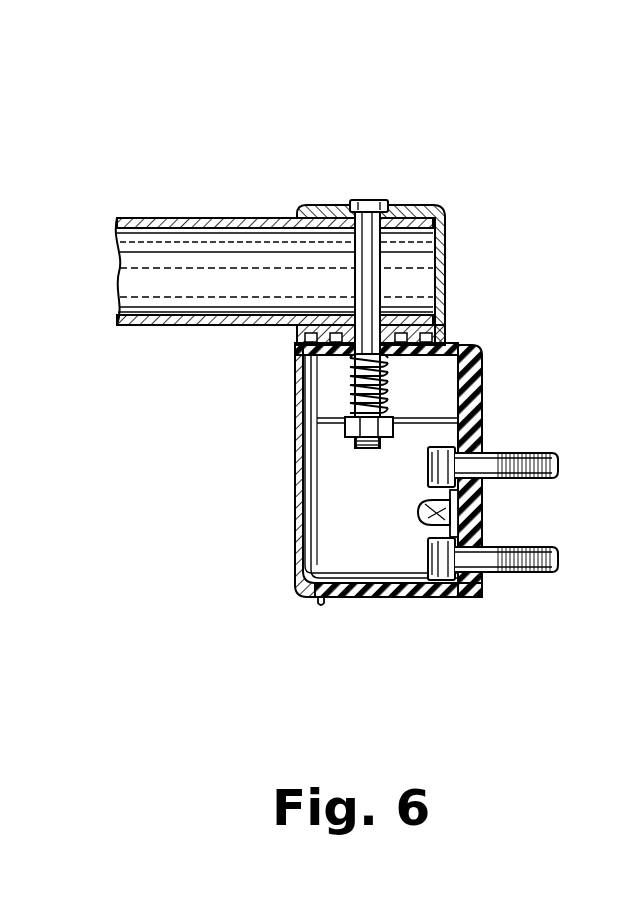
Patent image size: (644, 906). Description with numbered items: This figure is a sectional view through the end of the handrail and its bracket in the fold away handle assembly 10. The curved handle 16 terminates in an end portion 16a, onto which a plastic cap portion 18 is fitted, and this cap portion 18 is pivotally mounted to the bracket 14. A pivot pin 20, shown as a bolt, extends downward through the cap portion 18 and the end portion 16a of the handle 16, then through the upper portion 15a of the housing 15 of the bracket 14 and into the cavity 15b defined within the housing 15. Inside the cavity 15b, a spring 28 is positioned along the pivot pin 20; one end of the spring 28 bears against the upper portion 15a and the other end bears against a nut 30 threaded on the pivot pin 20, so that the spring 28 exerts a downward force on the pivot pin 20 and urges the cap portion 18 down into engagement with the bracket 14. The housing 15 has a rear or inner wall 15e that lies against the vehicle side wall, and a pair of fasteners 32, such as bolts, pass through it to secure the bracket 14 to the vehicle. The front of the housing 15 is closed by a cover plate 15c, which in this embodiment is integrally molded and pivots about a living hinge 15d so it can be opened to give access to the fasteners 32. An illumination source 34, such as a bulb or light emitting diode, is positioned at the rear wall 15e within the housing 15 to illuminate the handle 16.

The handle assembly 10 is at (423, 133).
The bracket 14 is at (253, 537).
The housing 15 is at (385, 491).
The upper portion of housing 15a is at (440, 345).
The cavity 15b is at (335, 478).
The cover plate 15c is at (295, 557).
The living hinge 15d is at (318, 602).
The rear wall of housing 15e is at (470, 520).
The handle 16 is at (205, 216).
The end portion of handle 16a is at (328, 245).
The cap portion 18 is at (438, 280).
The pivot pin 20 is at (383, 278).
The spring 28 is at (350, 385).
The nut 30 is at (345, 428).
The fasteners 32 is at (508, 452).
The illumination source 34 is at (425, 515).